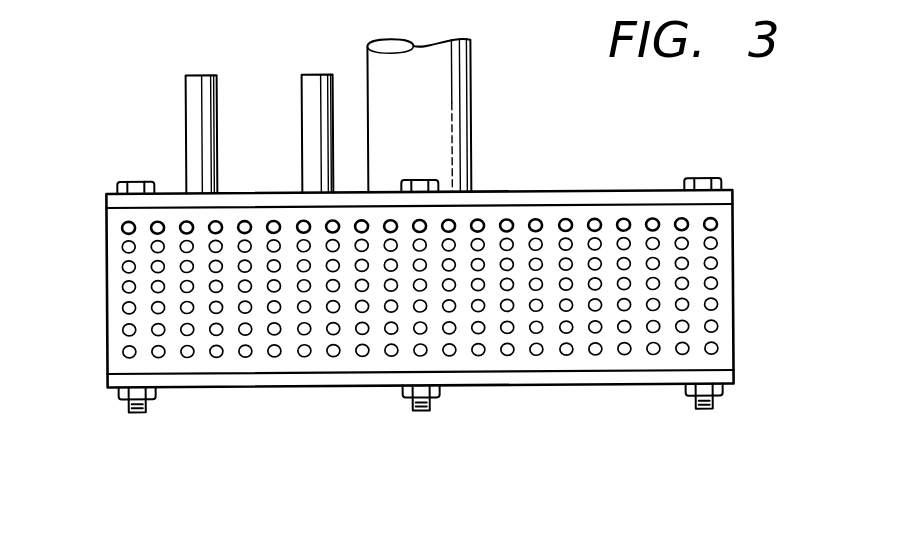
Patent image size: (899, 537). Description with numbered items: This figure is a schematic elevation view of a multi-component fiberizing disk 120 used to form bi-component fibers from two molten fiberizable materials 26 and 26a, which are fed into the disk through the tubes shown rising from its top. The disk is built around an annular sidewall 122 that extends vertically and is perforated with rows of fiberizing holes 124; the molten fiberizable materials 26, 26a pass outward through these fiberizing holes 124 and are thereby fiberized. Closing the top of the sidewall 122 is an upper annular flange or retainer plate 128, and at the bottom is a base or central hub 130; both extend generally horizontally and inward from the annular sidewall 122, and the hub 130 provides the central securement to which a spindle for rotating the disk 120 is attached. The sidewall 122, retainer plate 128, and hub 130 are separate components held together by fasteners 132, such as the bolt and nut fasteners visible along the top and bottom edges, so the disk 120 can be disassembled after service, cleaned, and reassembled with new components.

The multi-component fiberizing disk 120 is at (738, 145).
The annular sidewall 122 is at (733, 345).
The fiberizing holes 124 is at (710, 262).
The upper annular flange or retainer plate 128 is at (547, 197).
The base or central hub 130 is at (267, 390).
The fasteners 132 is at (703, 180).
The molten fiberizable material 26 is at (310, 113).
The molten fiberizable material 26a is at (193, 115).